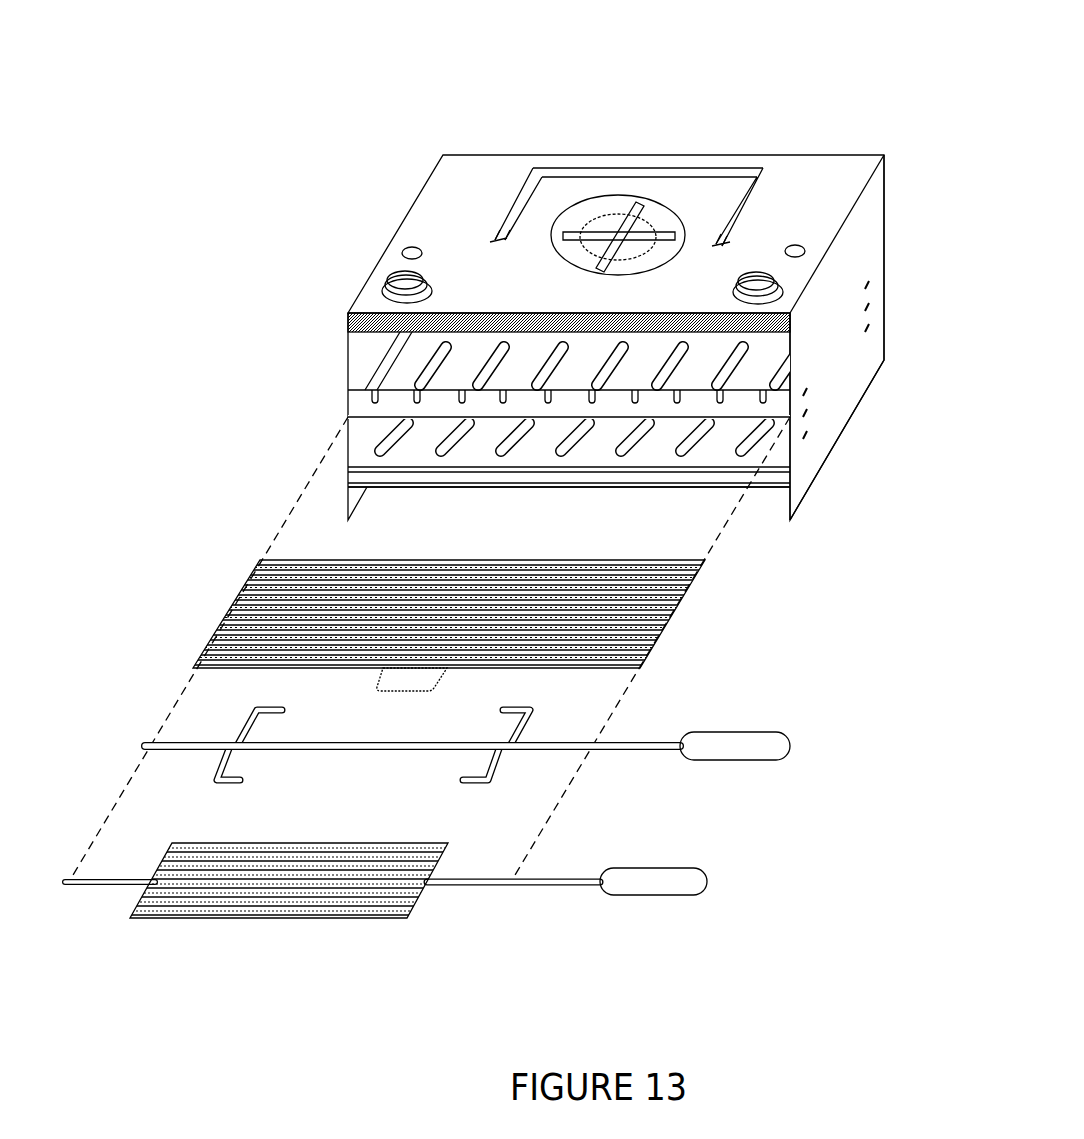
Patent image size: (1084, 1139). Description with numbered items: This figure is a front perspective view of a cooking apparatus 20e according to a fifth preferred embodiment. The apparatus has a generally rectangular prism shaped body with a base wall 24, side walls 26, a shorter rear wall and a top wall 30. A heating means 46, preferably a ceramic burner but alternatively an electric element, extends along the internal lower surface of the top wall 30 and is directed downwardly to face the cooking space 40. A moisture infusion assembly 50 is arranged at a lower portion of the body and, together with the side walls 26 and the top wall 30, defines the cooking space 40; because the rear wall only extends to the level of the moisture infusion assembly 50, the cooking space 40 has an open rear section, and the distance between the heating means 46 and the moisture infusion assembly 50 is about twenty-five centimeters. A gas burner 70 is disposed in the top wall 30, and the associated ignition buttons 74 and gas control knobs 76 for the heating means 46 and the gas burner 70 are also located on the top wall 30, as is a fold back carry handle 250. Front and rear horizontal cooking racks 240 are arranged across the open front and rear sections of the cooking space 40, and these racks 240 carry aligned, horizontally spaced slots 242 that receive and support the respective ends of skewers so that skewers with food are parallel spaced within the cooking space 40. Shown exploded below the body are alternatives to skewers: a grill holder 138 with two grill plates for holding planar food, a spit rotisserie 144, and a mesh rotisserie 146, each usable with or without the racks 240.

The cooking apparatus 20e is at (640, 110).
The top wall 30 is at (475, 176).
The fold back carry handle 250 is at (587, 168).
The gas burner 70 is at (655, 212).
The ignition buttons 74 is at (405, 250).
The gas control knobs 76 is at (402, 285).
The heating means 46 is at (348, 323).
The cooking space 40 is at (574, 391).
The side walls 26 is at (838, 383).
The cooking racks 240 is at (521, 470).
The slots 242 is at (630, 400).
The moisture infusion assembly 50 is at (458, 492).
The base wall 24 is at (753, 487).
The grill holder 138 is at (236, 598).
The spit rotisserie 144 is at (145, 744).
The mesh rotisserie 146 is at (80, 884).